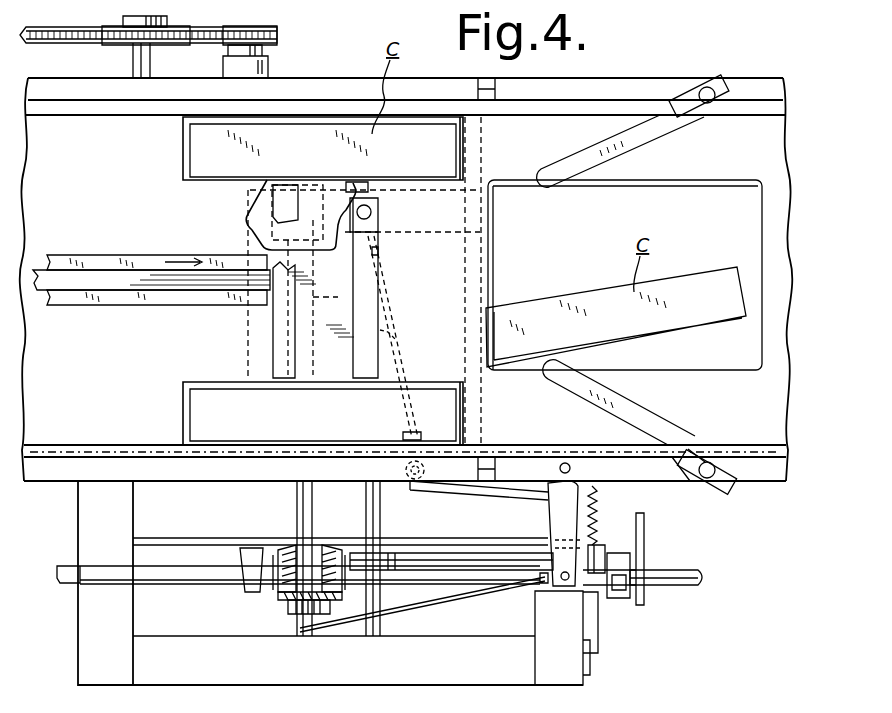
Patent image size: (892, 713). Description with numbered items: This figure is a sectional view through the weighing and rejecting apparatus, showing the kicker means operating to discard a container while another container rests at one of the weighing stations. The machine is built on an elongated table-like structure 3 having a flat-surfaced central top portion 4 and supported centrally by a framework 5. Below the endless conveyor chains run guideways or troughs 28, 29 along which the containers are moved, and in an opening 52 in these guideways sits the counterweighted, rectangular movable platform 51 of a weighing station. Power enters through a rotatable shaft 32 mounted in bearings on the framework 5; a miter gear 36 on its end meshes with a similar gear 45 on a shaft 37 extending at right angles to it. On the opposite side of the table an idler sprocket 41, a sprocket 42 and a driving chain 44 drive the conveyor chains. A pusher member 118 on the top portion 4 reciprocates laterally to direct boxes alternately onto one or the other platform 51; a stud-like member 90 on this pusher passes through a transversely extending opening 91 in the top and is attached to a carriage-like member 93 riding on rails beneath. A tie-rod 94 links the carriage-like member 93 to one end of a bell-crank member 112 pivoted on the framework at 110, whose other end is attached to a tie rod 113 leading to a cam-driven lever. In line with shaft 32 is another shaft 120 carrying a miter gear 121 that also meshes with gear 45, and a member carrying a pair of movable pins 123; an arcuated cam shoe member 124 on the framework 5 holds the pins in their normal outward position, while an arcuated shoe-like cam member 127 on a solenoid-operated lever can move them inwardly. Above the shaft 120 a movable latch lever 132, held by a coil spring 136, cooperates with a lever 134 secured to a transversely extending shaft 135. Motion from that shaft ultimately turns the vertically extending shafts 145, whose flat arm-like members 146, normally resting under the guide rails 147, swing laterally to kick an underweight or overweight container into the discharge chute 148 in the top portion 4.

The table-like structure 3 is at (340, 88).
The flat-surfaced central top portion 4 is at (68, 470).
The framework 5 is at (214, 685).
The guideway or trough 28 is at (600, 432).
The guideway or trough 29 is at (570, 125).
The rotatable shaft 32 is at (68, 583).
The miter gear 36 is at (273, 590).
The shaft 37 is at (300, 523).
The idler sprocket 41 is at (262, 50).
The sprocket 42 is at (165, 22).
The driving chain 44 is at (50, 34).
The miter gear 45 is at (305, 614).
The movable platform 51 is at (190, 146).
The opening 52 is at (190, 165).
The stud-like member 90 is at (372, 213).
The transversely extending opening 91 is at (358, 350).
The carriage-like member 93 is at (407, 245).
The tie-rod 94 is at (398, 344).
The pivot 110 is at (564, 463).
The bell-crank member 112 is at (560, 517).
The tie rod 113 is at (438, 606).
The pusher member 118 is at (252, 216).
The shaft 120 is at (690, 585).
The miter gear 121 is at (342, 582).
The movable pins 123 is at (620, 582).
The arcuated cam shoe member 124 is at (593, 628).
The arcuated shoe-like cam member 127 is at (645, 550).
The movable latch lever 132 is at (600, 550).
The lever 134 is at (455, 554).
The transversely extending shaft 135 is at (372, 514).
The coil spring 136 is at (598, 496).
The vertically extending shafts 145 is at (704, 86).
The flat arm-like members 146 is at (646, 142).
The guide rails 147 is at (620, 108).
The discharge chute 148 is at (732, 182).